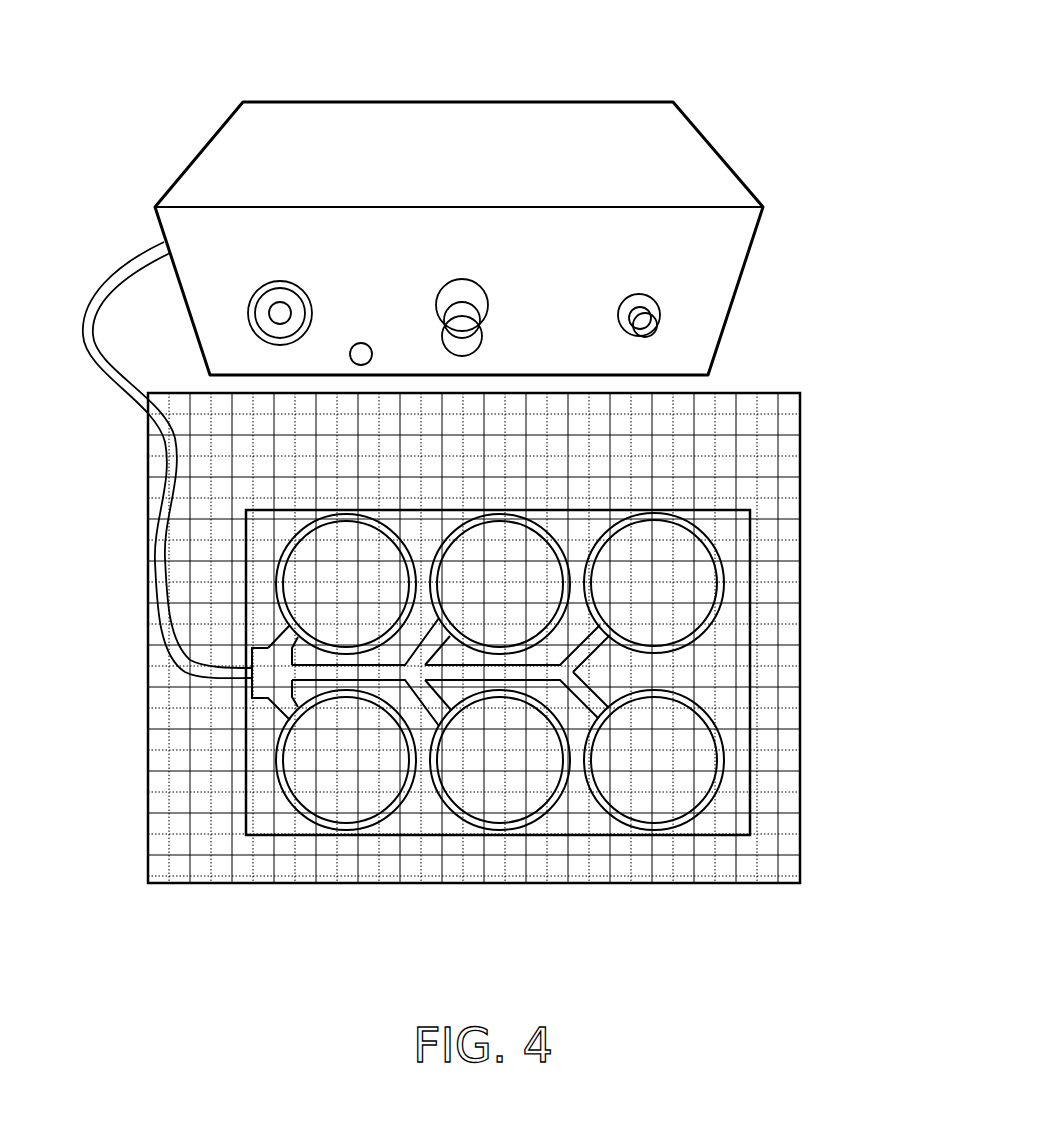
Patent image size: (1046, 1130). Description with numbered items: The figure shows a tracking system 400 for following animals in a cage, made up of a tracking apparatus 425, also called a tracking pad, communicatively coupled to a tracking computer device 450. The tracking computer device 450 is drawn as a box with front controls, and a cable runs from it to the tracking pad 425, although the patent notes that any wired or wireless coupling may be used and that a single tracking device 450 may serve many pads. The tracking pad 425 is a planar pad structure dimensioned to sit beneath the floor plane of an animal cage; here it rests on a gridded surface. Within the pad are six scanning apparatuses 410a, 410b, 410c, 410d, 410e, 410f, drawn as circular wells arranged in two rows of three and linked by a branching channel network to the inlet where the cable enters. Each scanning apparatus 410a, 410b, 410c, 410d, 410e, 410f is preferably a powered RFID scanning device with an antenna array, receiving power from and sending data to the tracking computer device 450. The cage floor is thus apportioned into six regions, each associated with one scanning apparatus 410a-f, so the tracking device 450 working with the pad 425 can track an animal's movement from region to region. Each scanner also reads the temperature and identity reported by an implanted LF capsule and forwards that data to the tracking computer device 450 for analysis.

The tracking system 400 is at (836, 183).
The tracking computer device 450 is at (452, 95).
The tracking apparatus 425 is at (464, 658).
The scanning apparatus 410a is at (313, 820).
The scanning apparatus 410b is at (468, 818).
The scanning apparatus 410c is at (700, 803).
The scanning apparatus 410d is at (283, 572).
The scanning apparatus 410e is at (490, 520).
The scanning apparatus 410f is at (722, 585).